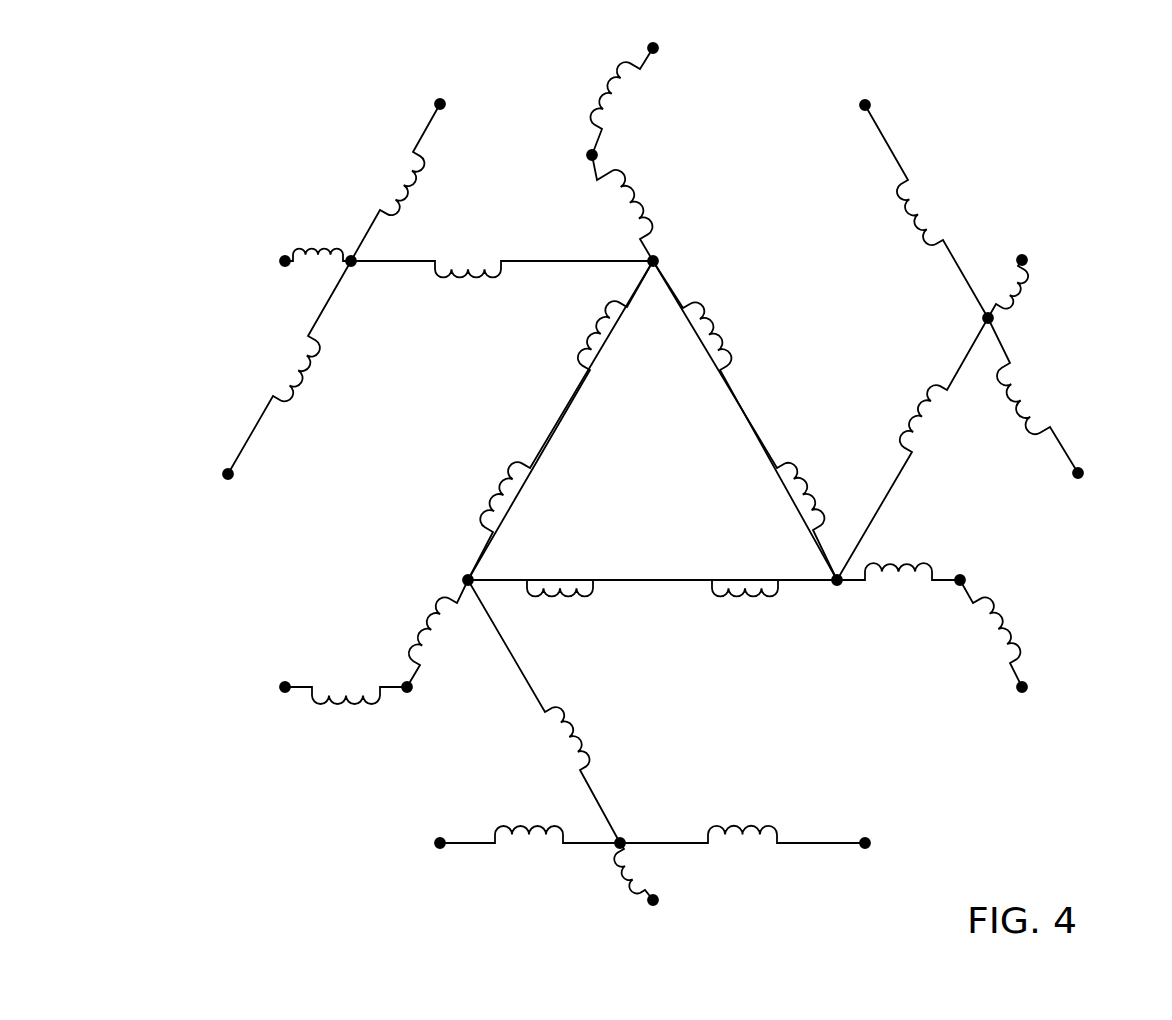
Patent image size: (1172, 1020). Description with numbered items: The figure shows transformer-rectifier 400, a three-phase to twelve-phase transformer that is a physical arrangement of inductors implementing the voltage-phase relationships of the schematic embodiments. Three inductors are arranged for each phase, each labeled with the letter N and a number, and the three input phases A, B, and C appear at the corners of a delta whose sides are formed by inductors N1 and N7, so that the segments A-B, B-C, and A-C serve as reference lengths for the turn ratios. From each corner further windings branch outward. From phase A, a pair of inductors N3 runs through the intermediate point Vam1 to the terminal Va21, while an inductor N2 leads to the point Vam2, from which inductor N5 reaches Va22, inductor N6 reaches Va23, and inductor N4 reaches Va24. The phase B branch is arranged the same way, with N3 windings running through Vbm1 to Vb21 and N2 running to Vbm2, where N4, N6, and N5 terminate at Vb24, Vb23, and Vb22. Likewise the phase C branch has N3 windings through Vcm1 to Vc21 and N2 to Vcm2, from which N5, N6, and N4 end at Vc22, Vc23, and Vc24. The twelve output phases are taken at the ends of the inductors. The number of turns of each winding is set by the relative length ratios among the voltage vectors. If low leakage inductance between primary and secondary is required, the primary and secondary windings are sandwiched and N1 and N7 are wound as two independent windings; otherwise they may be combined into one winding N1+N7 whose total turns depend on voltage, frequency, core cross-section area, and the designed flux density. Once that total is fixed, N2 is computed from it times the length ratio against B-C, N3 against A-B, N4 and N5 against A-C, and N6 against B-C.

The transformer-rectifier 400 is at (1032, 76).
The phase A is at (664, 262).
The phase B is at (838, 595).
The phase C is at (457, 582).
The inductor N1 is at (652, 445).
The inductor N2 is at (669, 552).
The inductor N3 is at (660, 391).
The inductor N4 is at (608, 474).
The inductor N5 is at (714, 473).
The inductor N6 is at (666, 562).
The inductor N7 is at (653, 445).
The phase A output terminal Va21 is at (653, 34).
The phase A output terminal Va22 is at (441, 90).
The phase A output terminal Va23 is at (259, 262).
The phase A output terminal Va24 is at (202, 477).
The phase A intermediate node Vam1 is at (562, 157).
The phase A intermediate node Vam2 is at (358, 273).
The phase B output terminal Vb21 is at (1048, 688).
The phase B output terminal Vb22 is at (1104, 475).
The phase B output terminal Vb23 is at (1048, 262).
The phase B output terminal Vb24 is at (866, 91).
The phase B intermediate node Vbm1 is at (978, 565).
The phase B intermediate node Vbm2 is at (978, 315).
The phase C output terminal Vc21 is at (259, 688).
The phase C output terminal Vc22 is at (440, 858).
The phase C output terminal Vc23 is at (653, 916).
The phase C output terminal Vc24 is at (865, 858).
The phase C intermediate node Vcm1 is at (427, 703).
The phase C intermediate node Vcm2 is at (627, 830).